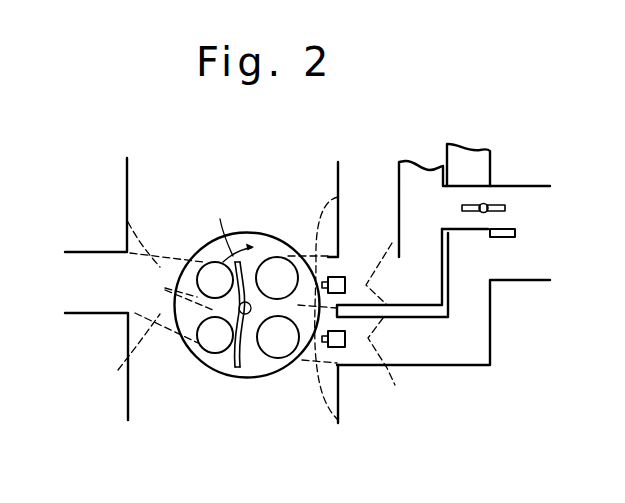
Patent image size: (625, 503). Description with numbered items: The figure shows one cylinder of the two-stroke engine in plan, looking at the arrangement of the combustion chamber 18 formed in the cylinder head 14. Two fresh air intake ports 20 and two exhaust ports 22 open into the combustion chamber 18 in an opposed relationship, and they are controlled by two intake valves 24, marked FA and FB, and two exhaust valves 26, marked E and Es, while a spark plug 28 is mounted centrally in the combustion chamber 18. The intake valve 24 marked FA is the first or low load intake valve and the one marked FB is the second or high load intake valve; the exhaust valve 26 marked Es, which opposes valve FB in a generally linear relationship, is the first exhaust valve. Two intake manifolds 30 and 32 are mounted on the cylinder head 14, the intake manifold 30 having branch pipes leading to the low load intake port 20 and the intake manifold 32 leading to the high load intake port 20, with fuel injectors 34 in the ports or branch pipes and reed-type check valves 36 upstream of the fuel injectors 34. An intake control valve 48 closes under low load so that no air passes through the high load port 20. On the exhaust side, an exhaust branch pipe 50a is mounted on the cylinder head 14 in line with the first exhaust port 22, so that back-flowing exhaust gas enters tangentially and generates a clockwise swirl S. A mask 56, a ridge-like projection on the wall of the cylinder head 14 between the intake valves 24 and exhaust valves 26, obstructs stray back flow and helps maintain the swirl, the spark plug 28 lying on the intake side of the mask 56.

The cylinder head 14 is at (128, 173).
The combustion chamber 18 is at (249, 235).
The fresh air intake ports 20 is at (339, 196).
The exhaust ports 22 is at (122, 222).
The intake valves 24 is at (274, 258).
The exhaust valves 26 is at (207, 263).
The spark plug 28 is at (241, 360).
The intake manifold 30 is at (471, 366).
The intake manifold 32 is at (444, 212).
The fuel injectors 34 is at (337, 277).
The check valves 36 is at (384, 317).
The intake control valve 48 is at (491, 208).
The exhaust branch pipe 50a is at (92, 303).
The mask 56 is at (233, 366).